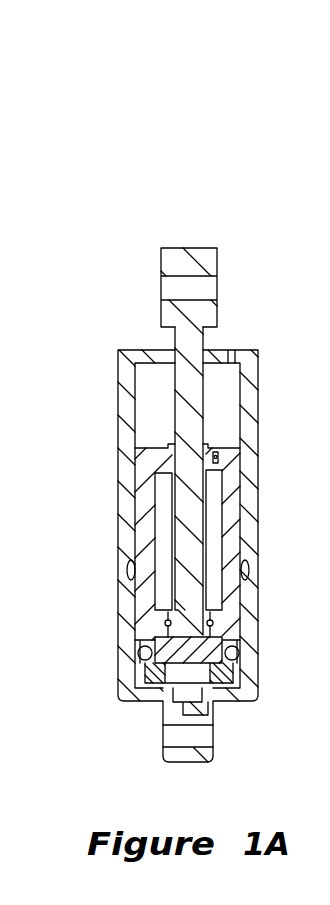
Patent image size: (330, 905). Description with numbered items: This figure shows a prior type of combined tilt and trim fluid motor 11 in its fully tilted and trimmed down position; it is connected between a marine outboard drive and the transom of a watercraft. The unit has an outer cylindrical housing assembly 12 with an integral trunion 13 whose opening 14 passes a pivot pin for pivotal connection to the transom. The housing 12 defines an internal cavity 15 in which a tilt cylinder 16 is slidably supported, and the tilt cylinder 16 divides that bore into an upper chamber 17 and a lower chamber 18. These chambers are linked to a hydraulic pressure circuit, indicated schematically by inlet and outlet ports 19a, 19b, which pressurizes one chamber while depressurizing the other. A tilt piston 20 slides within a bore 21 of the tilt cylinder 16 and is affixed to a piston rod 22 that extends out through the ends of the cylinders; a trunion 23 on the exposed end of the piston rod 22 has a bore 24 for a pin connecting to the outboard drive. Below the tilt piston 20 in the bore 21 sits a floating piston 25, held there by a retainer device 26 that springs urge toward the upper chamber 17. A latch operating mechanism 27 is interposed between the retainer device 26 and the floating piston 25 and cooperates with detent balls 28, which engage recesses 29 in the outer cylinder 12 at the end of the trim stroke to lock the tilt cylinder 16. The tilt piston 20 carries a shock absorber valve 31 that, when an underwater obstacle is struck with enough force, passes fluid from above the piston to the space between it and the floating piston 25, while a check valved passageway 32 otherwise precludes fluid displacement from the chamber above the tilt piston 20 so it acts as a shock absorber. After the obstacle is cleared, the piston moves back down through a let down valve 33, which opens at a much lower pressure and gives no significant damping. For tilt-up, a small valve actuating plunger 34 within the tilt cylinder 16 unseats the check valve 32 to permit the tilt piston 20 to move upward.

The combined tilt and trim fluid motor 11 is at (152, 236).
The outer cylindrical housing assembly 12 is at (250, 380).
The trunion 13 is at (183, 763).
The opening 14 is at (192, 727).
The internal cavity 15 is at (137, 425).
The tilt cylinder 16 is at (237, 473).
The upper chamber 17 is at (218, 378).
The lower chamber 18 is at (164, 708).
The inlet port 19a is at (237, 351).
The outlet port 19b is at (212, 717).
The tilt piston 20 is at (224, 620).
The bore 21 is at (155, 507).
The piston rod 22 is at (200, 343).
The trunion 23 is at (198, 260).
The bore 24 is at (203, 298).
The floating piston 25 is at (157, 637).
The retainer device 26 is at (216, 684).
The latch operating mechanism 27 is at (228, 668).
The detent balls 28 is at (137, 660).
The recesses 29 is at (132, 570).
The shock absorber valve 31 is at (153, 620).
The check valved passageway 32 is at (219, 461).
The let down valve 33 is at (214, 623).
The valve actuating plunger 34 is at (220, 452).